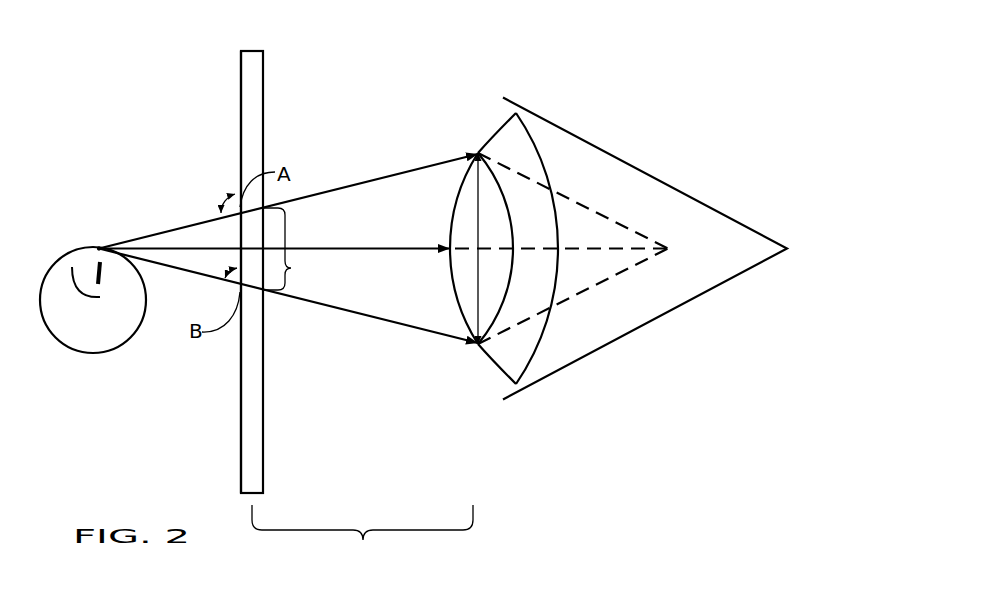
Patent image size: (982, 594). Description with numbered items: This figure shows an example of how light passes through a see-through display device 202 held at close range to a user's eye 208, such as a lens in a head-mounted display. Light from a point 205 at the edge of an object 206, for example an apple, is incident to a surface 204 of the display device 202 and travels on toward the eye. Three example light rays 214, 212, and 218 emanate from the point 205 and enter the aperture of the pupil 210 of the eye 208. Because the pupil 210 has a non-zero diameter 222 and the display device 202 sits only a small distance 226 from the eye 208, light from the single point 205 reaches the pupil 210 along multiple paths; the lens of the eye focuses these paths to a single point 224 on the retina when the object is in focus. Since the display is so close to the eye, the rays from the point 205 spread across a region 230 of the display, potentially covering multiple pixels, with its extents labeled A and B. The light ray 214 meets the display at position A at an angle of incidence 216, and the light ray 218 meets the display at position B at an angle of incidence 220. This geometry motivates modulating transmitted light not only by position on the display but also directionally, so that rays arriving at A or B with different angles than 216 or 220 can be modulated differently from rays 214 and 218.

The display device 202 is at (252, 50).
The surface 204 is at (240, 152).
The point 205 is at (99, 247).
The object 206 is at (93, 354).
The user's eye 208 is at (495, 368).
The pupil 210 is at (465, 215).
The light ray 212 is at (403, 247).
The light ray 214 is at (402, 170).
The angle of incidence 216 is at (234, 194).
The light ray 218 is at (415, 330).
The angle of incidence 220 is at (235, 267).
The diameter 222 is at (480, 227).
The point 224 is at (670, 247).
The distance 226 is at (362, 537).
The region 230 is at (296, 249).